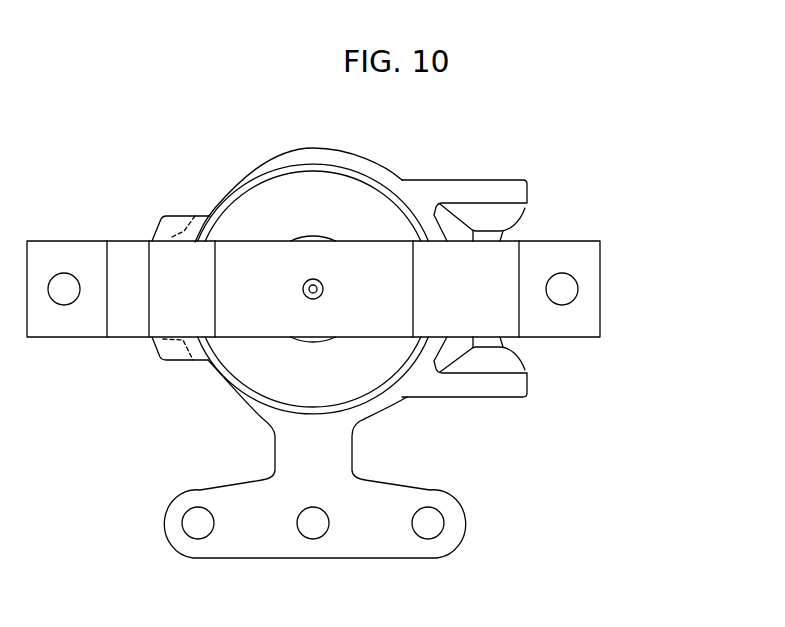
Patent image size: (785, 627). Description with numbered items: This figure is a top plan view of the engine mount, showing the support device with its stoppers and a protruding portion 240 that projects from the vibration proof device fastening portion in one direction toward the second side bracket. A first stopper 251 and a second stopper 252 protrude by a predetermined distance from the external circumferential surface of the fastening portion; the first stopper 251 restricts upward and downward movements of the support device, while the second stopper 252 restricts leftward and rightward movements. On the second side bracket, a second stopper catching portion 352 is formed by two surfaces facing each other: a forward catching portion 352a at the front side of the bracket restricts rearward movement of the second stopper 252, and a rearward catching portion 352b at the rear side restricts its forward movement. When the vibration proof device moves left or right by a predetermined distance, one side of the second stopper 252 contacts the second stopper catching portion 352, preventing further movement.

The protruding portion 240 is at (500, 387).
The first stopper 251 is at (163, 215).
The second stopper 252 is at (580, 247).
The second stopper catching portion 352 is at (580, 288).
The forward catching portion 352a is at (549, 367).
The rearward catching portion 352b is at (524, 213).